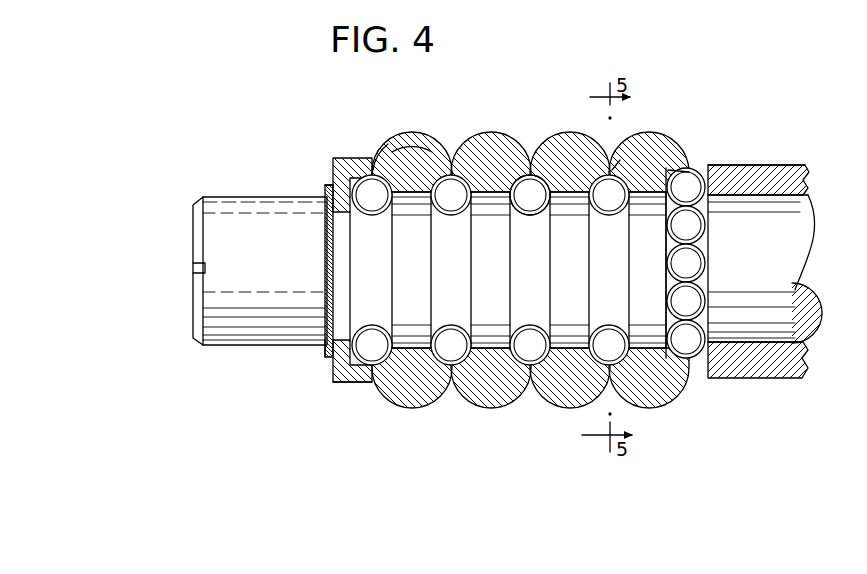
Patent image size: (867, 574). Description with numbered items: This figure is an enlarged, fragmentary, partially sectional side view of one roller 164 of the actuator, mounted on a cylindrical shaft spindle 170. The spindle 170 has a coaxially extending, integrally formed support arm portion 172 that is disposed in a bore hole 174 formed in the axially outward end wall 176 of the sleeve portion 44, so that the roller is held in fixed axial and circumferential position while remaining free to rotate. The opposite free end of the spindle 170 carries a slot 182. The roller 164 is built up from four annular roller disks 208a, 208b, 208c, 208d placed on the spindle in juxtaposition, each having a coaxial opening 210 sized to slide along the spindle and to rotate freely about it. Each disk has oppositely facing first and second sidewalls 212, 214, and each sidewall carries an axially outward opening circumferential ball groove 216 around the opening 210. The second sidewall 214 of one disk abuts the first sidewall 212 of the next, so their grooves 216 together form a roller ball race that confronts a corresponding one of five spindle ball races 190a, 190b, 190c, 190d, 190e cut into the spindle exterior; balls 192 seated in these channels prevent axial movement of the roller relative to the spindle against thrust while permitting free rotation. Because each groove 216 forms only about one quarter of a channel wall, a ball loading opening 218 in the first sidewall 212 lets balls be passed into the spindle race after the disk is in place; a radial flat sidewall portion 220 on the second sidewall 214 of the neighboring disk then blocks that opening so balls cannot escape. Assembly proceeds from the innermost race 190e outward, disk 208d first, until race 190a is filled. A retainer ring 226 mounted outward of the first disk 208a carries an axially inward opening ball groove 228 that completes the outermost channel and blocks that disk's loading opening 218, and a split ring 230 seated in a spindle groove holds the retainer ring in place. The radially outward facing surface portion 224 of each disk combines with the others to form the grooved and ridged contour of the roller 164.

The roller 164 is at (395, 113).
The cylindrical shaft spindle 170 is at (327, 287).
The support arm portion 172 is at (778, 308).
The bore hole 174 is at (773, 196).
The axially outward end wall 176 is at (717, 175).
The slot 182 is at (197, 265).
The spindle ball race 190a is at (395, 281).
The spindle ball race 190b is at (472, 281).
The spindle ball race 190c is at (550, 281).
The spindle ball race 190d is at (628, 281).
The spindle ball race 190e is at (703, 280).
The ball 192 is at (700, 250).
The first roller disk 208a is at (416, 146).
The roller disk 208b is at (492, 142).
The roller disk 208c is at (571, 142).
The fourth roller disk 208d is at (658, 147).
The coaxial opening 210 is at (410, 208).
The first sidewall 212 is at (465, 148).
The second sidewall 214 is at (673, 145).
The circumferential ball groove 216 is at (388, 180).
The ball loading opening 218 is at (330, 177).
The flat sidewall portion 220 is at (532, 172).
The radially outward facing surface portion 224 is at (384, 157).
The retainer ring 226 is at (340, 381).
The ball groove 228 is at (355, 355).
The split ring 230 is at (320, 345).
The sleeve portion 44 is at (775, 178).